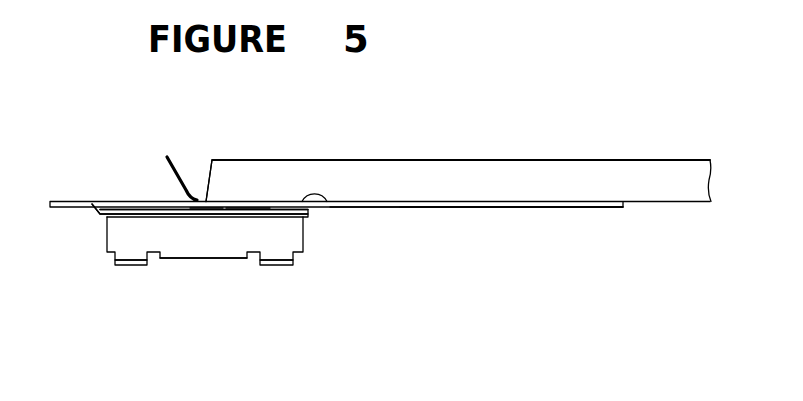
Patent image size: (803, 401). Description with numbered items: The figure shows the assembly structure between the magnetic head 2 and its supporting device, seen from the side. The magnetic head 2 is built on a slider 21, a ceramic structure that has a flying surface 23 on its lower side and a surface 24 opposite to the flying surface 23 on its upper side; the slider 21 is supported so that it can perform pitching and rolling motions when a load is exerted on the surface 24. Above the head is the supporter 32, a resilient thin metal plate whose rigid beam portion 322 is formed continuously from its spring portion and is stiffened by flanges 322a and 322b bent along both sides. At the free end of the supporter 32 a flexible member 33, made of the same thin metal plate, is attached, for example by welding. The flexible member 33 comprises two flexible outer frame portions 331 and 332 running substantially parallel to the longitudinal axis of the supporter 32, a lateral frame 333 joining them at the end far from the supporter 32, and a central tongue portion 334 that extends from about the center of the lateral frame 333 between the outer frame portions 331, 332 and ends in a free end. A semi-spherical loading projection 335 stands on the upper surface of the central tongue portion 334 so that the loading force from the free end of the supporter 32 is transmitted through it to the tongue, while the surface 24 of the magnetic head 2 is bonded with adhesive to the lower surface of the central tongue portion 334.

The magnetic head 2 is at (310, 246).
The slider 21 is at (193, 240).
The flying surface 23 is at (128, 267).
The surface opposite to the flying surface 24 is at (333, 208).
The supporter 32 is at (427, 156).
The flexible member 33 is at (430, 208).
The rigid beam portion 322 is at (647, 203).
The flange 322a is at (530, 177).
The flange 322b is at (458, 181).
The flexible outer frame portion 331 is at (127, 209).
The flexible outer frame portion 332 is at (200, 209).
The lateral frame 333 is at (73, 201).
The central tongue portion 334 is at (273, 211).
The loading projection 335 is at (210, 205).